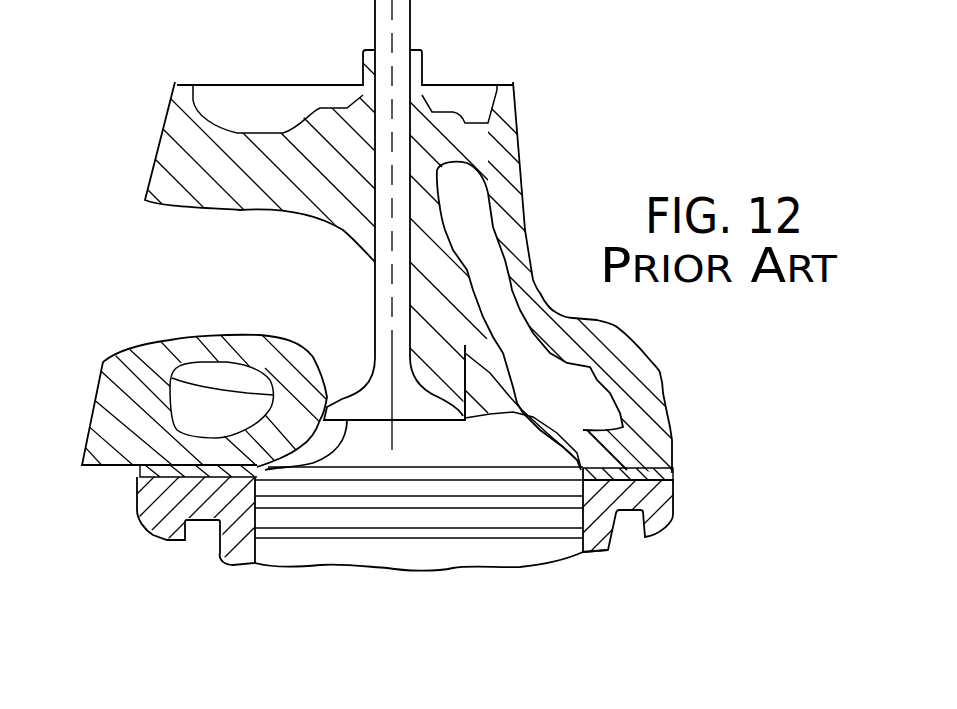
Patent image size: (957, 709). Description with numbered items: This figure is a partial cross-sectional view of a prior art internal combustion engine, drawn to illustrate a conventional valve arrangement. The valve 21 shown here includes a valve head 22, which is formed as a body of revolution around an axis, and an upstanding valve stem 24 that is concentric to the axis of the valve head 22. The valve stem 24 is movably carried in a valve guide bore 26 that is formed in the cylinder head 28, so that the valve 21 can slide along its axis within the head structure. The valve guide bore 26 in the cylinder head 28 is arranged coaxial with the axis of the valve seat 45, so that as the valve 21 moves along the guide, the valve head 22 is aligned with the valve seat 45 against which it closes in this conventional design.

The valve 21 is at (383, 45).
The valve stem 24 is at (403, 107).
The valve guide bore 26 is at (412, 148).
The cylinder head 28 is at (656, 441).
The valve seat 45 is at (170, 375).
The valve head 22 is at (262, 465).